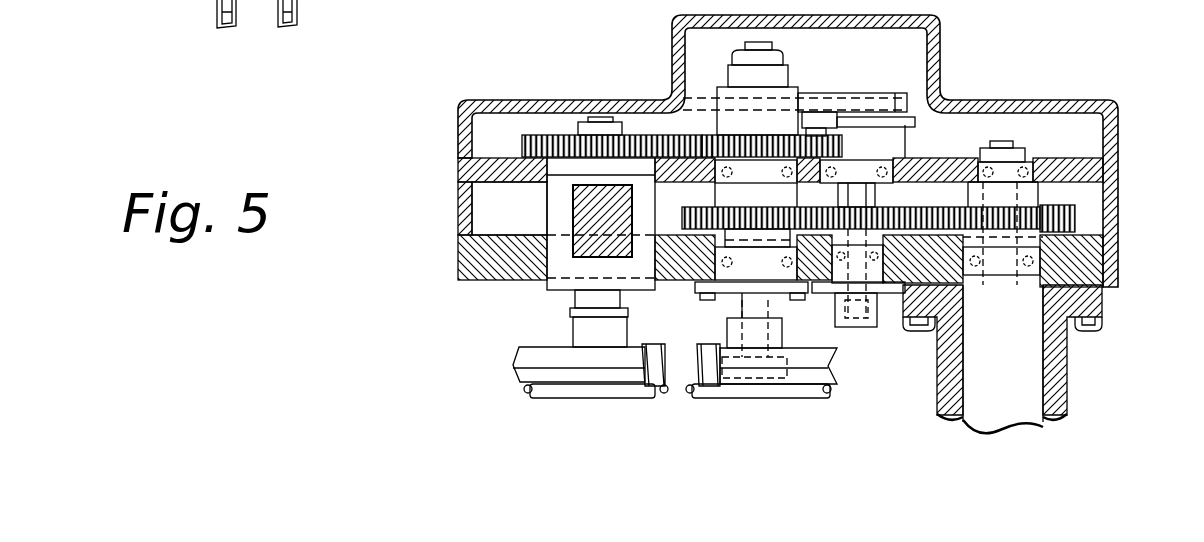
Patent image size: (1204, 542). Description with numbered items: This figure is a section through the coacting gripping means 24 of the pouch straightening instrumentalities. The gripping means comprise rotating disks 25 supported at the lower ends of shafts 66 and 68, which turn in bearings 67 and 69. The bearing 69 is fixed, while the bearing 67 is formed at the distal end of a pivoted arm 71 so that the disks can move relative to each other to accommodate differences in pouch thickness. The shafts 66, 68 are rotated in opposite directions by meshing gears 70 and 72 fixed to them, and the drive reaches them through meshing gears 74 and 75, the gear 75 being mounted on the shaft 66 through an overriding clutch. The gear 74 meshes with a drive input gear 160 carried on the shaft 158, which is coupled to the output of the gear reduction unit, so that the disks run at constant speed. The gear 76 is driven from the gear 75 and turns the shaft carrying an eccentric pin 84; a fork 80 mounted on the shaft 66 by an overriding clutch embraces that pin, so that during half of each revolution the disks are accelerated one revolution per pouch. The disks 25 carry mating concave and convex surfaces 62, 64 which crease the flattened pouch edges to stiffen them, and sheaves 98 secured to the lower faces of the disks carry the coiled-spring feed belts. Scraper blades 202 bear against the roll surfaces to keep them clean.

The gripping means 24 is at (452, 346).
The rotating disk 25 is at (520, 348).
The concave surface 62 is at (515, 374).
The convex surface 64 is at (836, 354).
The shaft 66 is at (742, 302).
The bearing 67 is at (547, 284).
The shaft 68 is at (622, 300).
The bearing 69 is at (782, 295).
The gear 70 is at (712, 138).
The arm 71 is at (577, 212).
The gear 72 is at (522, 141).
The gear 74 is at (938, 210).
The gear 75 is at (756, 220).
The gear 76 is at (907, 166).
The fork 80 is at (795, 90).
The eccentric pin 84 is at (808, 98).
The sheave 98 is at (585, 398).
The shaft 158 is at (1017, 364).
The drive input gear 160 is at (1078, 214).
The scraper blade 202 is at (690, 390).